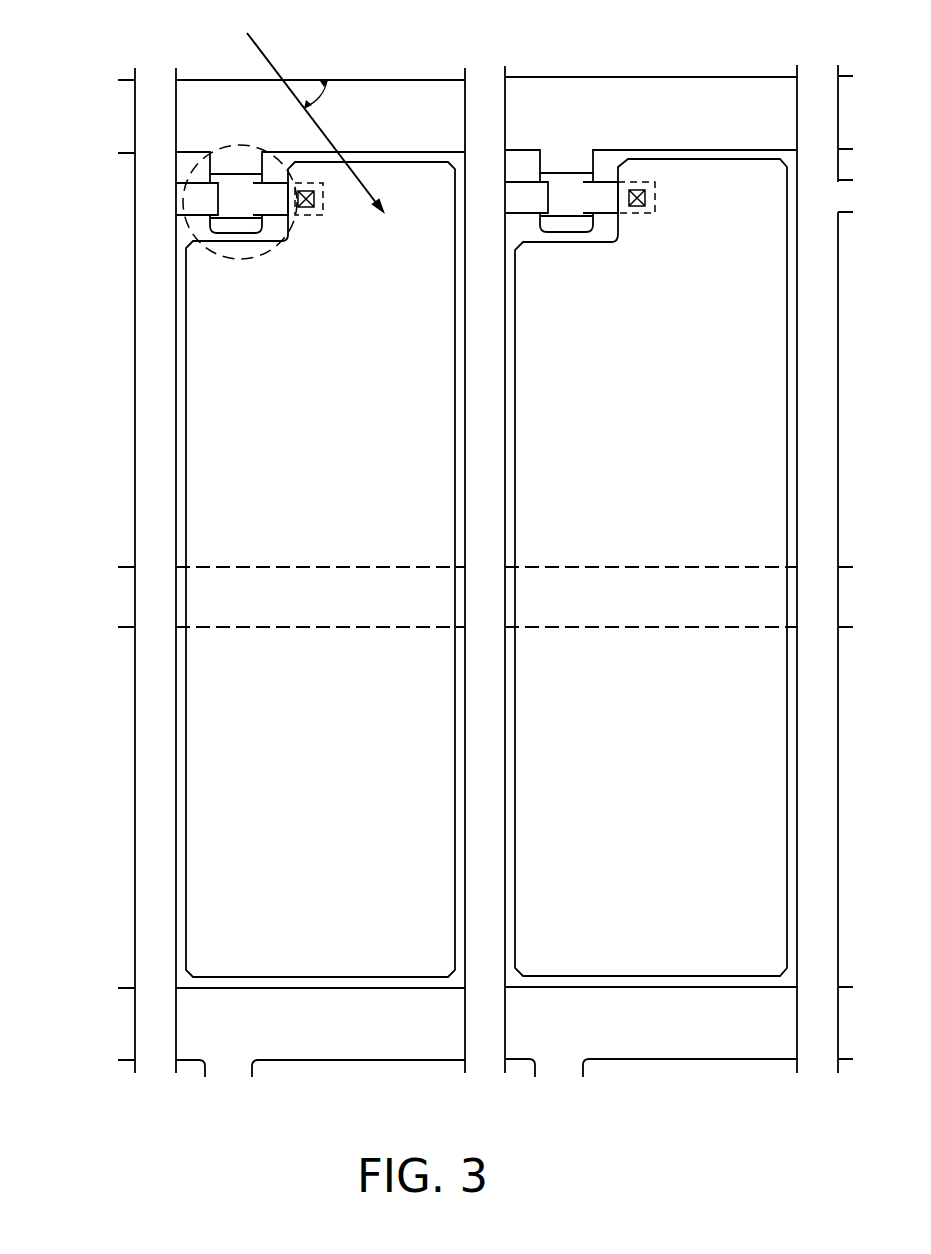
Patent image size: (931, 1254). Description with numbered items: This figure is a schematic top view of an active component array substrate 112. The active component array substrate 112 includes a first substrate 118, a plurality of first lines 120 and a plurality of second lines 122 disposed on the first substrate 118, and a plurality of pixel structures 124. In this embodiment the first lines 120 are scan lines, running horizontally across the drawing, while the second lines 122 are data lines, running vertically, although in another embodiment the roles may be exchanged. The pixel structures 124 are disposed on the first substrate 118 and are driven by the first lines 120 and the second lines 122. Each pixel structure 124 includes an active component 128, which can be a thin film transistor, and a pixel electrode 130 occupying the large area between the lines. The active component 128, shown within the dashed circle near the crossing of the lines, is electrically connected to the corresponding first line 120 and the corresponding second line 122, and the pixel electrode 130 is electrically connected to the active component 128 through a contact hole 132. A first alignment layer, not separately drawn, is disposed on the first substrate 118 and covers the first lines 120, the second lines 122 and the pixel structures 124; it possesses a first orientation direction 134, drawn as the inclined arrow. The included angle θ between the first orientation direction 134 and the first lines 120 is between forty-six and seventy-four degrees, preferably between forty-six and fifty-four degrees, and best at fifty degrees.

The active component array substrate 112 is at (823, 1152).
The first substrate 118 is at (455, 895).
The first lines 120 is at (378, 97).
The second lines 122 is at (150, 202).
The pixel structure 124 is at (235, 561).
The active component 128 is at (186, 227).
The pixel electrode 130 is at (72, 282).
The contact hole 132 is at (308, 208).
The first orientation direction 134 is at (263, 50).